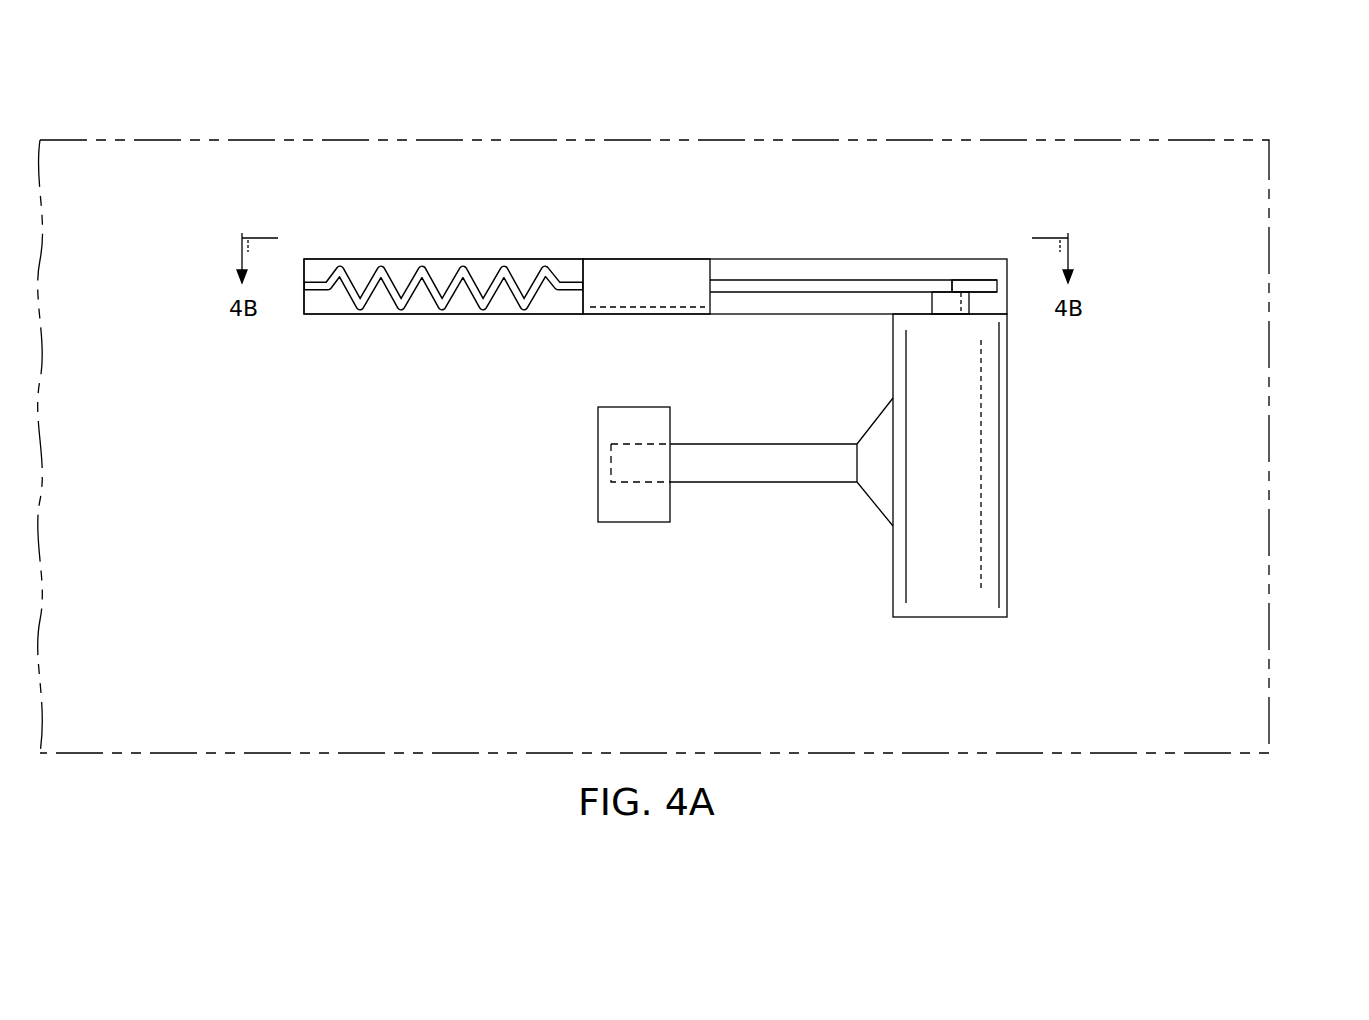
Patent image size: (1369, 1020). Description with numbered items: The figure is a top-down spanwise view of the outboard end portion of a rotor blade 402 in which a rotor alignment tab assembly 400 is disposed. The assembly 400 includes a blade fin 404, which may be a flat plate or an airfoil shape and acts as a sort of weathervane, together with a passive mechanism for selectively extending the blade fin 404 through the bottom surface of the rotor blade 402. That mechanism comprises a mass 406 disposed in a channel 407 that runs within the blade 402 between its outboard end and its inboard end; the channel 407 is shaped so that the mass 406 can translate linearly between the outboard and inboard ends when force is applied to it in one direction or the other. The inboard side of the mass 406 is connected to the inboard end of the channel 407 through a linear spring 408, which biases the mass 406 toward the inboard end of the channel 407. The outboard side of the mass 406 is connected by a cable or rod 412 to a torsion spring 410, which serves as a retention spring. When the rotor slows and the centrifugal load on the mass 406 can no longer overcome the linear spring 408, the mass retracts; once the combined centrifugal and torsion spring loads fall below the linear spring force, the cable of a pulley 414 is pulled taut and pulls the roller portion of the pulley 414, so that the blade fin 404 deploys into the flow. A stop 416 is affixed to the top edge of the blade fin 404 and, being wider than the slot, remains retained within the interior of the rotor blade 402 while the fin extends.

The rotor alignment tab assembly 400 is at (473, 124).
The rotor blade 402 is at (1278, 333).
The blade fin 404 is at (757, 444).
The mass 406 is at (645, 268).
The channel 407 is at (378, 306).
The linear spring 408 is at (357, 266).
The torsion spring 410 is at (978, 284).
The cable 412 is at (808, 280).
The pulley 414 is at (892, 578).
The stop 416 is at (634, 522).